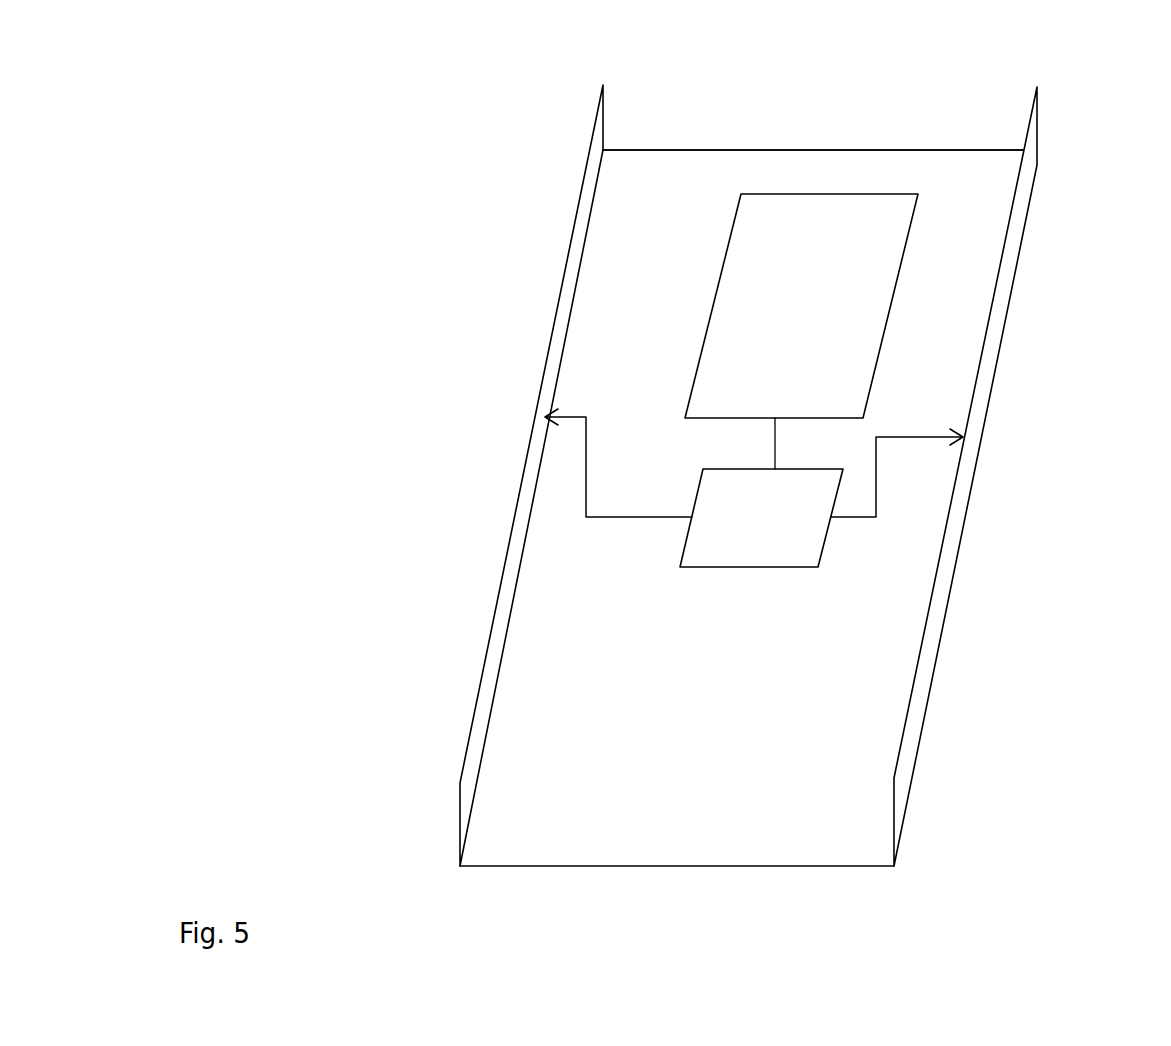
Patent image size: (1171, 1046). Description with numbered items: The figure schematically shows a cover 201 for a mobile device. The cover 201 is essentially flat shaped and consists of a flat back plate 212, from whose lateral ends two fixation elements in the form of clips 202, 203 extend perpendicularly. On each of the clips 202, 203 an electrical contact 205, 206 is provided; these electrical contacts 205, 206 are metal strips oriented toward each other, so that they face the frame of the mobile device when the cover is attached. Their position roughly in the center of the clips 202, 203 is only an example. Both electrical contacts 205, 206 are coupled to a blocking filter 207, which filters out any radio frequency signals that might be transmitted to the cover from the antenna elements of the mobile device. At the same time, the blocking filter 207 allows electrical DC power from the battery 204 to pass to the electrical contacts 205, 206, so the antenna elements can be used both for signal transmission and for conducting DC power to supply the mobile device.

The cover 201 is at (965, 187).
The fixation element 202 is at (1030, 170).
The fixation element 203 is at (597, 165).
The battery 204 is at (787, 203).
The electrical contact 205 is at (553, 383).
The electrical contact 206 is at (982, 392).
The blocking filter 207 is at (750, 547).
The back plate 212 is at (685, 175).